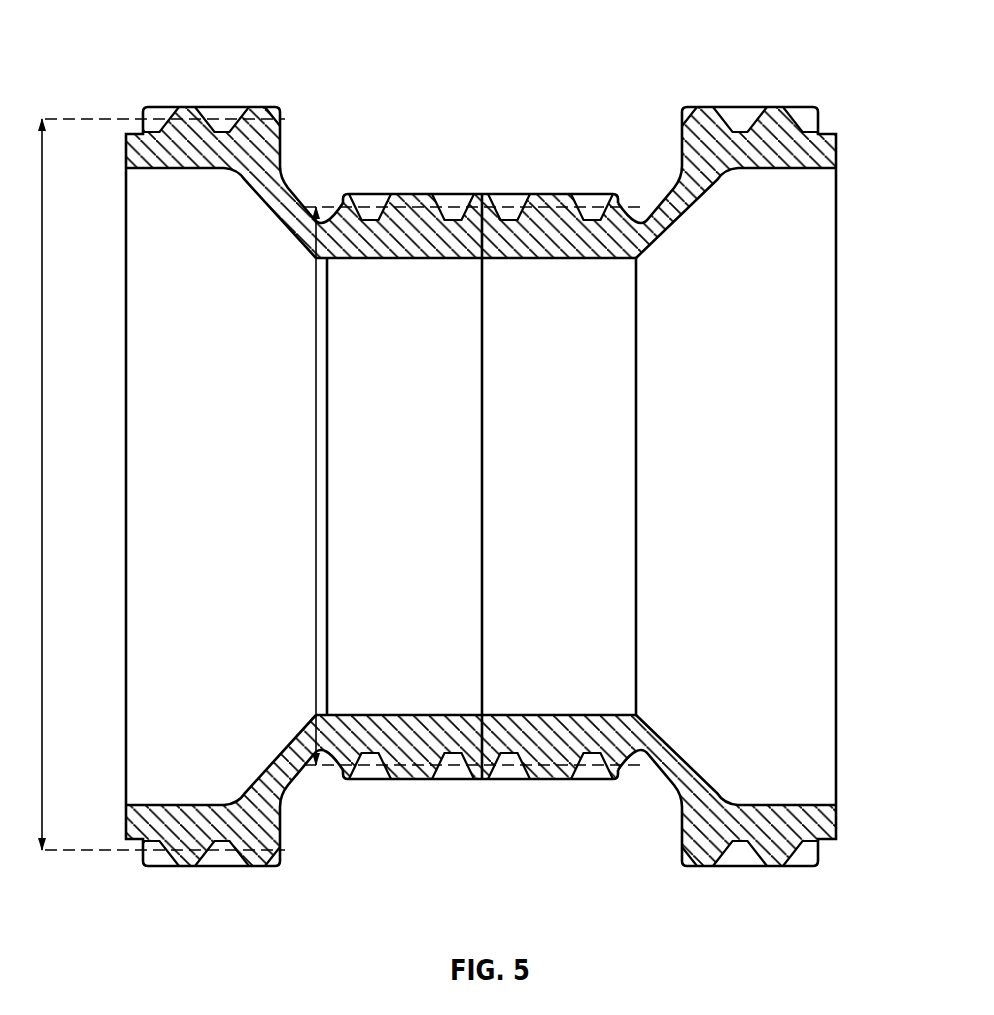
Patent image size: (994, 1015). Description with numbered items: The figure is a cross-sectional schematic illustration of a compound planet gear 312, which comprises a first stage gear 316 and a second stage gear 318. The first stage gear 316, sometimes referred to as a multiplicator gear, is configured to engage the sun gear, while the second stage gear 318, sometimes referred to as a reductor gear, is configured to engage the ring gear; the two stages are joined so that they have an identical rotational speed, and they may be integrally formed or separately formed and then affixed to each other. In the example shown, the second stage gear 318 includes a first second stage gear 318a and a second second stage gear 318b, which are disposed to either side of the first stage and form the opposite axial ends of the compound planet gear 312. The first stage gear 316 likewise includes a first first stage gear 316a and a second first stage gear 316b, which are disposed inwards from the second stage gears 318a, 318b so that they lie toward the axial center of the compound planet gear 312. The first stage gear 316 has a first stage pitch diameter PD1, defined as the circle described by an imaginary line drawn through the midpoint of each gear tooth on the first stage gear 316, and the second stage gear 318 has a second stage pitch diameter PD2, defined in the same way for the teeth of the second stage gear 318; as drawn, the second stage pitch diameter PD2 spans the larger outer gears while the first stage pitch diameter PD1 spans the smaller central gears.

The compound planet gear 312 is at (708, 72).
The first stage gear 316 is at (546, 714).
The first first stage gear 316a is at (350, 212).
The second first stage gear 316b is at (556, 200).
The second stage gear 318 is at (190, 803).
The first second stage gear 318a is at (258, 107).
The second second stage gear 318b is at (770, 115).
The first stage pitch diameter PD1 is at (315, 383).
The second stage pitch diameter PD2 is at (44, 392).